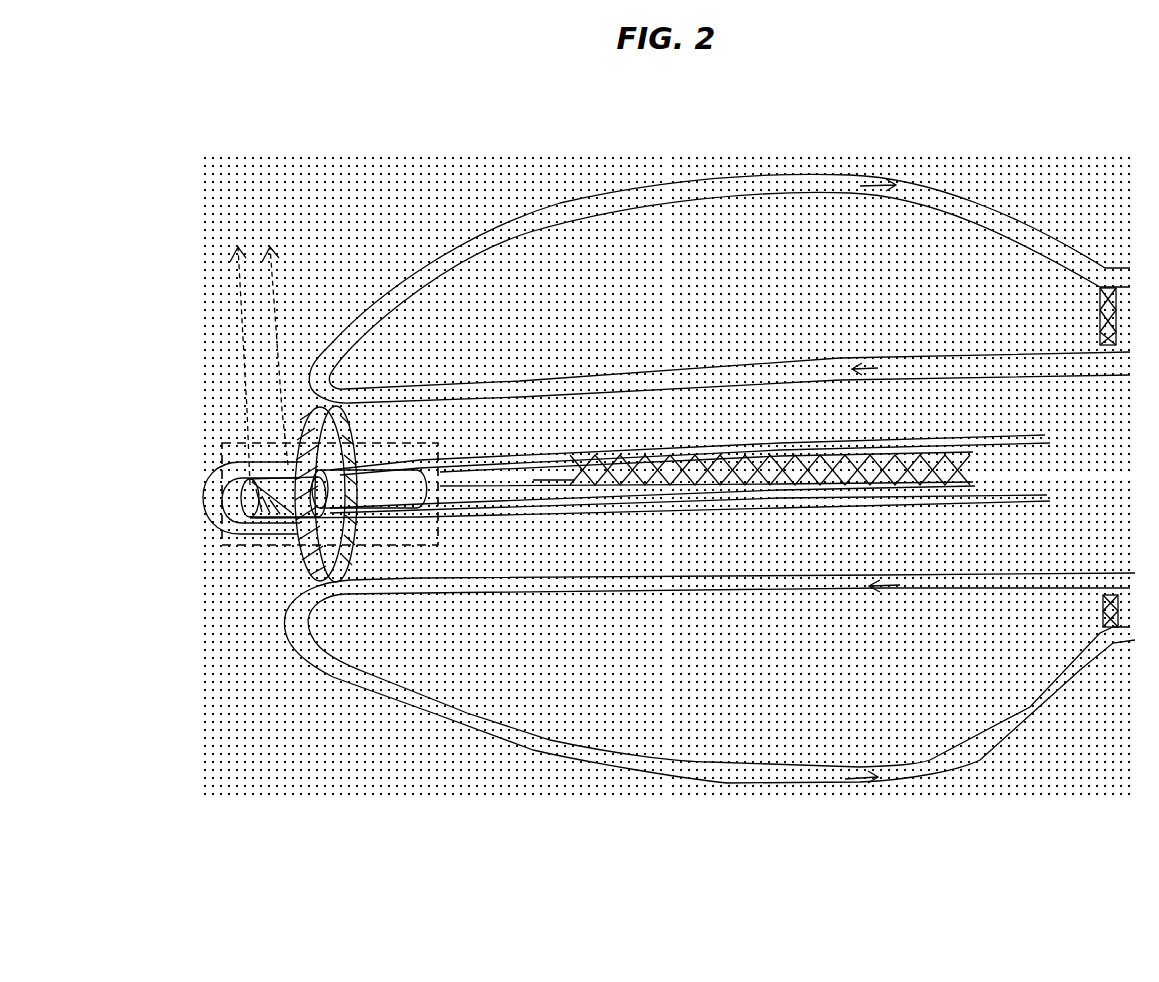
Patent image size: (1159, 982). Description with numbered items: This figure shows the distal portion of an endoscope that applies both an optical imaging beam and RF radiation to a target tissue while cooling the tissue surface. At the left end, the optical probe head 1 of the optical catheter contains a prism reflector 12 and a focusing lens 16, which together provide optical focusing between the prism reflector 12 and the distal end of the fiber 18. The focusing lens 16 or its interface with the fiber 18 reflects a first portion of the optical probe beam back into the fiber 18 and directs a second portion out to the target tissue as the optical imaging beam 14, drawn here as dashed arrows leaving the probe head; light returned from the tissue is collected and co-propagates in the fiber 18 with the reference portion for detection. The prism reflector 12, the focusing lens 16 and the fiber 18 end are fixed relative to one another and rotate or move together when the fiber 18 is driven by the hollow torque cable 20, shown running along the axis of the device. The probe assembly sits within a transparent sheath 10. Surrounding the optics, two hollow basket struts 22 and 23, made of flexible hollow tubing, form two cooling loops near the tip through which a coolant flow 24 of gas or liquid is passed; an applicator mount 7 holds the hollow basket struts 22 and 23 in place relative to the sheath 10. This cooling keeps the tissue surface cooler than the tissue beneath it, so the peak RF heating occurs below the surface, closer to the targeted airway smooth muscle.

The optical probe head 1 is at (238, 425).
The applicator mount 7 is at (305, 560).
The sheath 10 is at (227, 545).
The prism reflector 12 is at (250, 493).
The optical imaging beam 14 is at (252, 328).
The focusing lens 16 is at (384, 478).
The fiber 18 is at (541, 472).
The torque cable 20 is at (682, 491).
The hollow basket strut 22 is at (524, 764).
The hollow basket strut 23 is at (363, 323).
The coolant flow 24 is at (850, 785).